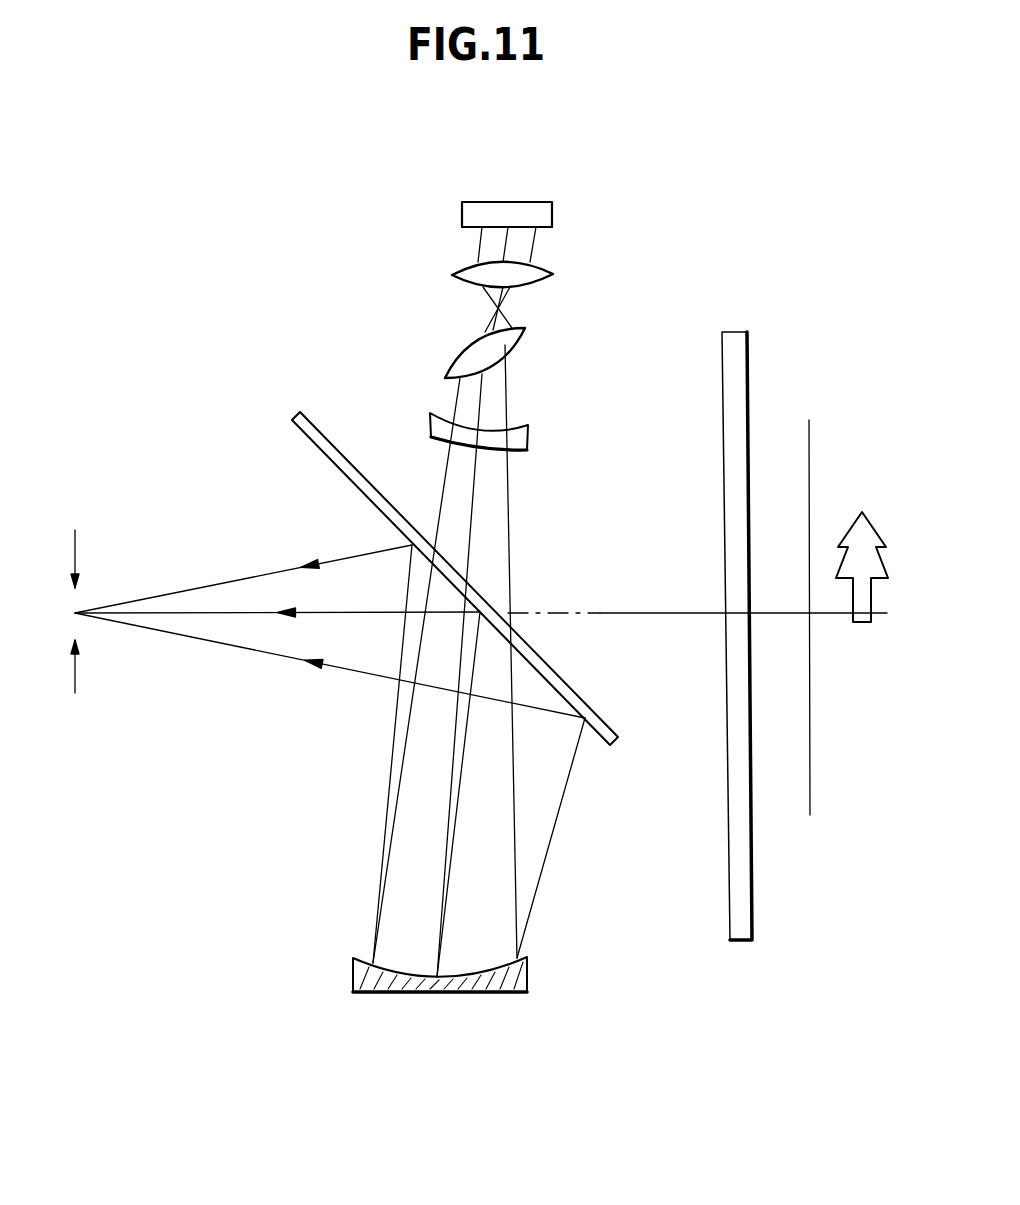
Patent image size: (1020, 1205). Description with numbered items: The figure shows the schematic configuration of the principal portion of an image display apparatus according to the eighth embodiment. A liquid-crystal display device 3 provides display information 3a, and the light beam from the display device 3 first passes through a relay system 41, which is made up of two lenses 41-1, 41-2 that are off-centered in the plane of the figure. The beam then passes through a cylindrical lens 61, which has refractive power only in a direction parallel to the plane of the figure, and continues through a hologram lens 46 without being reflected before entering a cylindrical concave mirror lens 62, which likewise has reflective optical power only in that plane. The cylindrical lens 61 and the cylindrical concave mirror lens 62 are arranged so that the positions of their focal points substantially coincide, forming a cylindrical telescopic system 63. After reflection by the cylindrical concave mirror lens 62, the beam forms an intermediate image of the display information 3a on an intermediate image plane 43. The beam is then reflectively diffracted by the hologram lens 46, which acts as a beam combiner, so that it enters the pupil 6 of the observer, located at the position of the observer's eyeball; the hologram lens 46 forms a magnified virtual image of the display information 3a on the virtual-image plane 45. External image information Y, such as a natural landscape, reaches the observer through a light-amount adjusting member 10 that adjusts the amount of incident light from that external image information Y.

The display device 3 is at (552, 213).
The display information 3a is at (550, 228).
The relay system 41 is at (551, 318).
The lens 41-1 is at (527, 277).
The lens 41-2 is at (513, 350).
The cylindrical lens 61 is at (495, 431).
The hologram lens 46 is at (450, 567).
The cylindrical concave mirror lens 62 is at (458, 974).
The cylindrical telescopic system 63 is at (629, 1005).
The intermediate image plane 43 is at (392, 782).
The pupil 6 is at (315, 624).
The light-amount adjusting member 10 is at (732, 332).
The virtual-image plane 45 is at (808, 497).
The image information Y is at (862, 512).